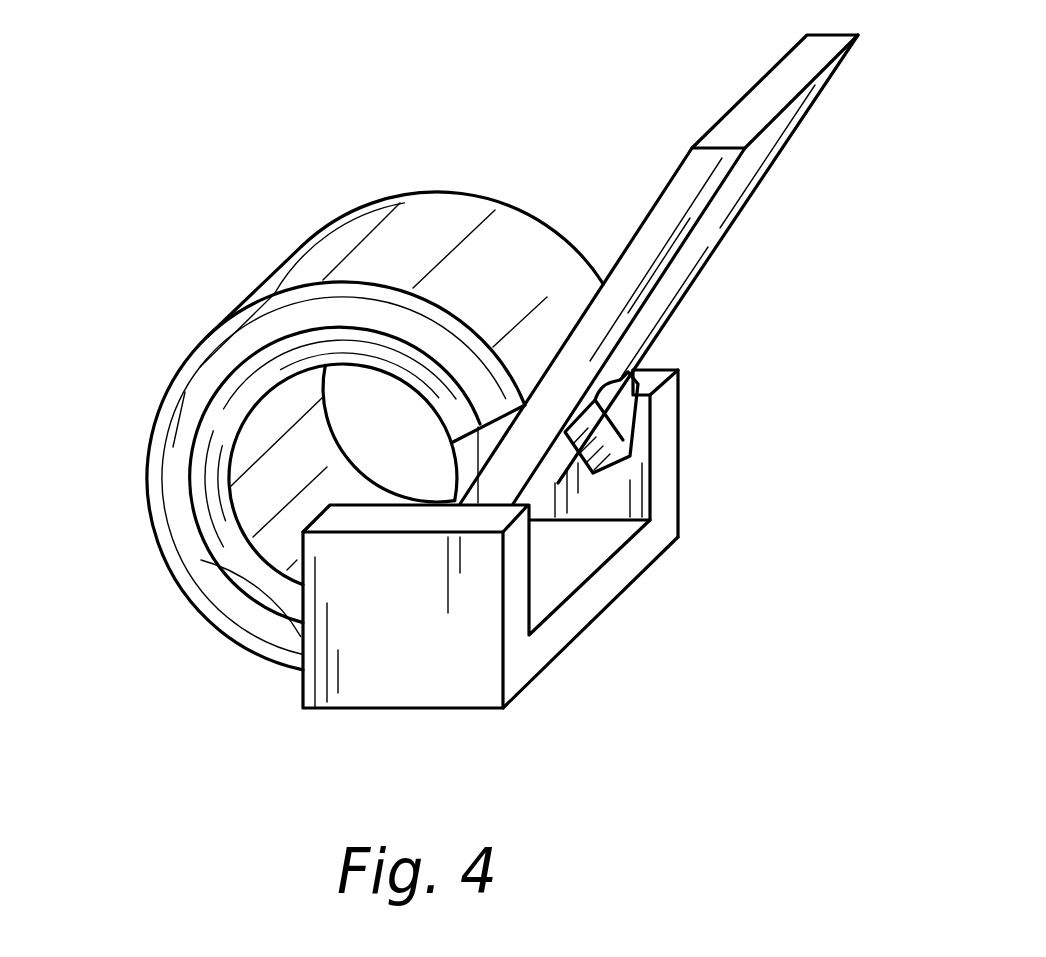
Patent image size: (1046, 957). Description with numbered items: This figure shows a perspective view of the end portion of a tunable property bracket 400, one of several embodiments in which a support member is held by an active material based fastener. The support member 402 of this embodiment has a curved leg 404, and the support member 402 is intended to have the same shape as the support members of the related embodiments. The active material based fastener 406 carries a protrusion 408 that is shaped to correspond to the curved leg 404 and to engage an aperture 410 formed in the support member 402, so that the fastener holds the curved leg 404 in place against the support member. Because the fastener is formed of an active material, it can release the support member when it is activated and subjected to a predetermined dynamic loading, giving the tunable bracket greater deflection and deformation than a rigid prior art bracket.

The tunable property bracket 400 is at (391, 158).
The support member 402 is at (768, 100).
The curved leg 404 is at (227, 540).
The active material based fastener 406 is at (318, 262).
The protrusion 408 is at (615, 428).
The aperture 410 is at (643, 370).